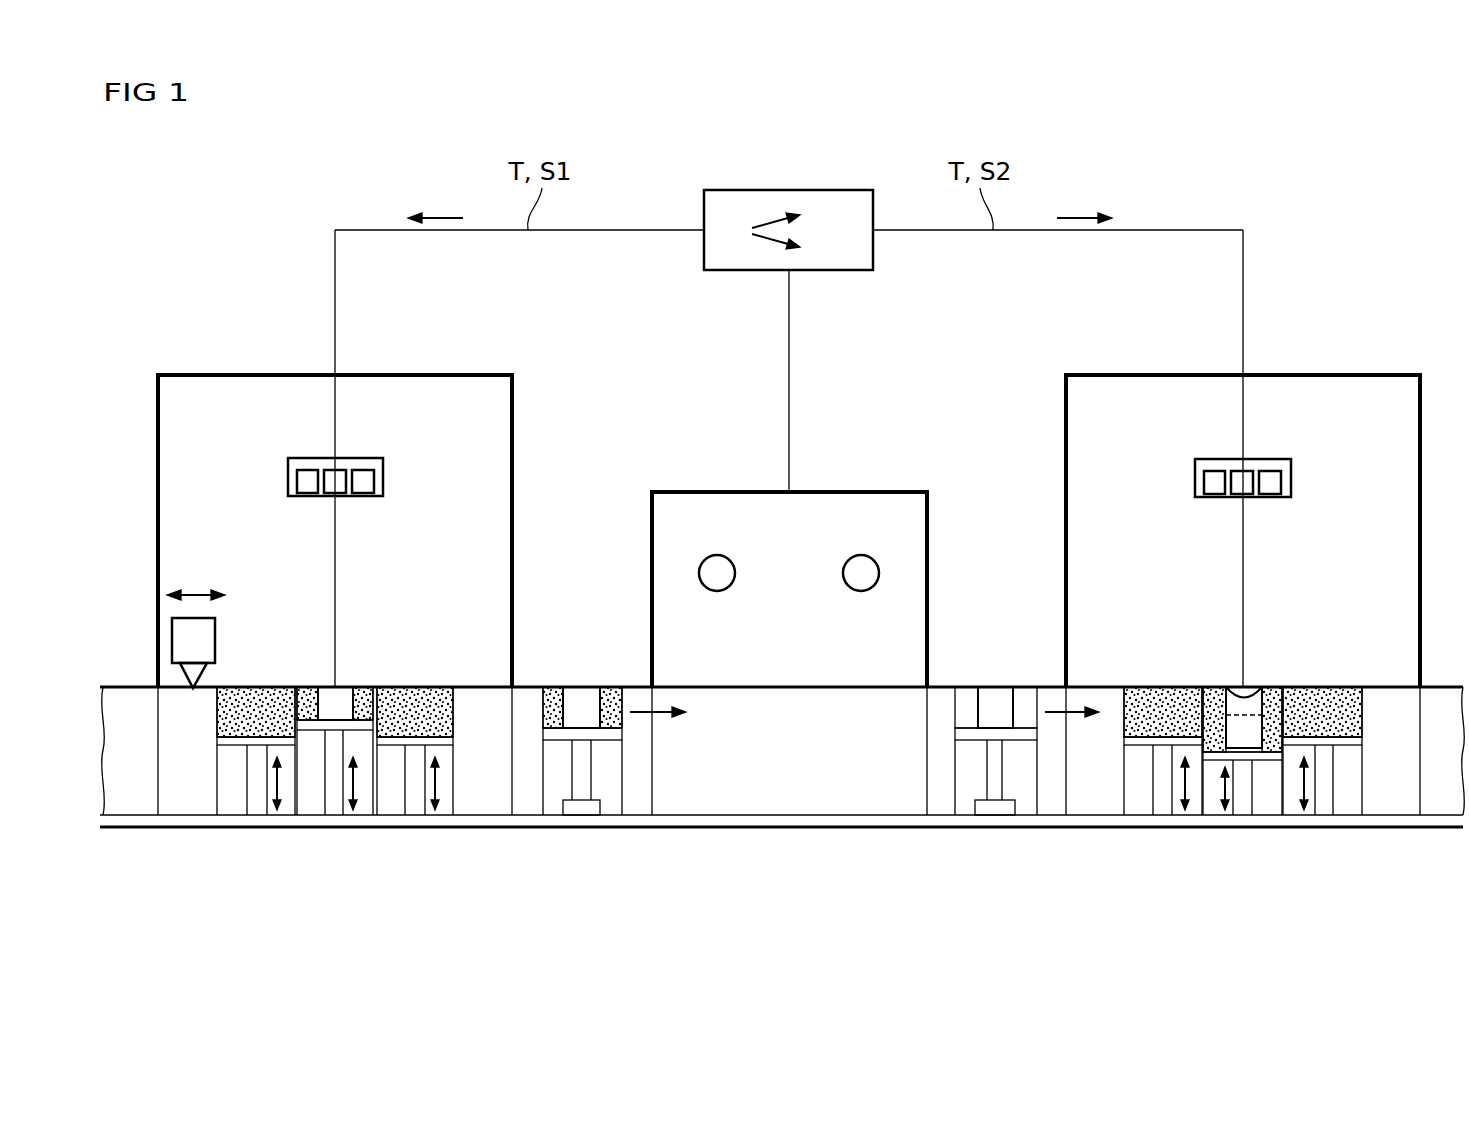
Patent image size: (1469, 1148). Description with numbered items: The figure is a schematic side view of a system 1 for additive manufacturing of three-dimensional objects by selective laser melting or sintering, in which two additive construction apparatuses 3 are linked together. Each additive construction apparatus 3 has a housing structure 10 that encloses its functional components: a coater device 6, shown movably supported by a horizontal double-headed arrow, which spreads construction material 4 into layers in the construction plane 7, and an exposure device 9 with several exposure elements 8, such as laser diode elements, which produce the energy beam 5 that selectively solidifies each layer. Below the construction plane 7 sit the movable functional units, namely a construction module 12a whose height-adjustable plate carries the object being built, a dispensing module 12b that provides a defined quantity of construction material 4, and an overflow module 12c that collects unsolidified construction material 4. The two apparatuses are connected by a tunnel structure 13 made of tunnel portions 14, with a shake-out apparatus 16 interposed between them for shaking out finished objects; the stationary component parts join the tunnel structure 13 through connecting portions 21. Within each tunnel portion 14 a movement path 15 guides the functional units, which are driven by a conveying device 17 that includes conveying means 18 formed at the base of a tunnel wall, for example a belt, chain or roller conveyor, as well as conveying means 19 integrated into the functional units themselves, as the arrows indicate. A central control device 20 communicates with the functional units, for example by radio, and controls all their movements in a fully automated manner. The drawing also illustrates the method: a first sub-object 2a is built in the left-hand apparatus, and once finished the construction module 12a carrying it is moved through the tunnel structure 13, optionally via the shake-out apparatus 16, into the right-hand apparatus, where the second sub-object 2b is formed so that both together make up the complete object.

The system for additive manufacturing 1 is at (1312, 130).
The first sub-object 2a is at (340, 700).
The second sub-object 2b is at (1245, 702).
The additive construction apparatus 3 is at (468, 350).
The construction material 4 is at (254, 690).
The energy beam 5 is at (337, 546).
The coater device 6 is at (190, 612).
The construction plane 7 is at (316, 602).
The exposure element 8 is at (368, 482).
The exposure device 9 is at (350, 458).
The housing structure 10 is at (218, 375).
The construction module 12a is at (312, 805).
The dispensing module 12b is at (228, 803).
The overflow module 12c is at (390, 803).
The tunnel structure 13 is at (596, 562).
The tunnel portion 14 is at (128, 685).
The movement path 15 is at (528, 818).
The shake-out apparatus 16 is at (713, 492).
The conveying device 17 is at (634, 820).
The conveying means on the tunnel structure 18 is at (781, 858).
The conveying means on the functional unit 19 is at (580, 808).
The central control device 20 is at (790, 190).
The connecting portion 21 is at (158, 794).